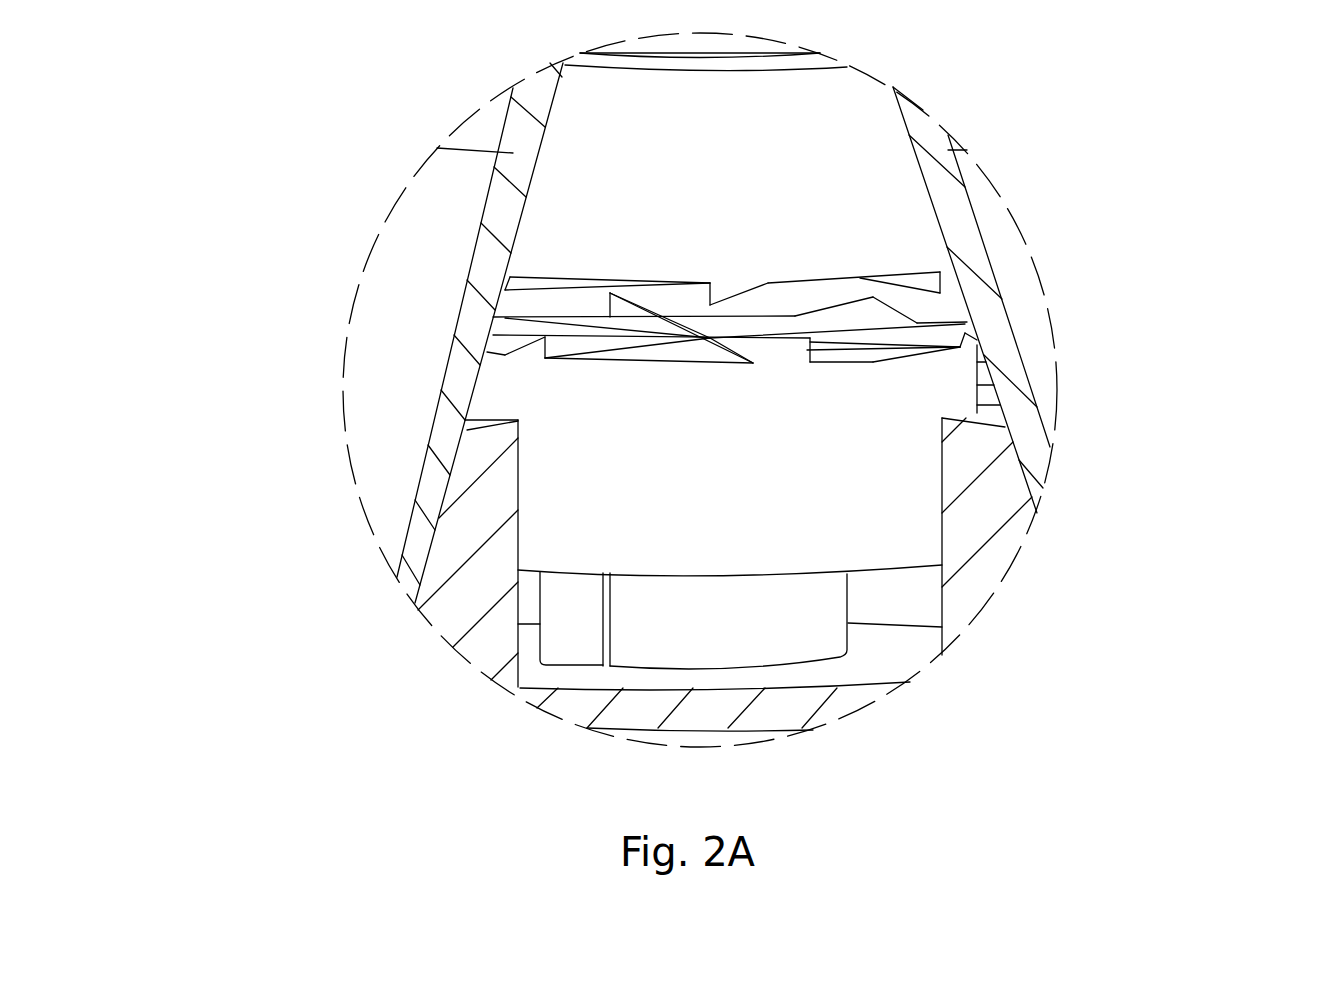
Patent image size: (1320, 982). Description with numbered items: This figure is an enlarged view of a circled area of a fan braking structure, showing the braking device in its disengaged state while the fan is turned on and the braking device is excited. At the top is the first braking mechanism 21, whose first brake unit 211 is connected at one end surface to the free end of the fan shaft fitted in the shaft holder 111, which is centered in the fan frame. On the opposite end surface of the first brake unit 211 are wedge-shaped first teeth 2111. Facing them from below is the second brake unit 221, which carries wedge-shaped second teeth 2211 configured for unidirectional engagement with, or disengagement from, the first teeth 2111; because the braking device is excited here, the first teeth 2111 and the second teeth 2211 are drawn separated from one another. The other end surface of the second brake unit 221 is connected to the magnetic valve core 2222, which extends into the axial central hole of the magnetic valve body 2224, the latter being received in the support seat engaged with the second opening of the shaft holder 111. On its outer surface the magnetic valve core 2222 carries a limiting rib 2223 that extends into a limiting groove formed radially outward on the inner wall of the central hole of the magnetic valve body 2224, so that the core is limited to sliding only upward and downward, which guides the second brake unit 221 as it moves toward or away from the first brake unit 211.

The first braking mechanism 21 is at (838, 130).
The first brake unit 211 is at (610, 202).
The shaft holder 111 is at (990, 207).
The first teeth 2111 is at (716, 303).
The second teeth 2211 is at (867, 362).
The second brake unit 221 is at (547, 448).
The magnetic valve body 2224 is at (997, 488).
The magnetic valve core 2222 is at (807, 618).
The limiting rib 2223 is at (563, 635).